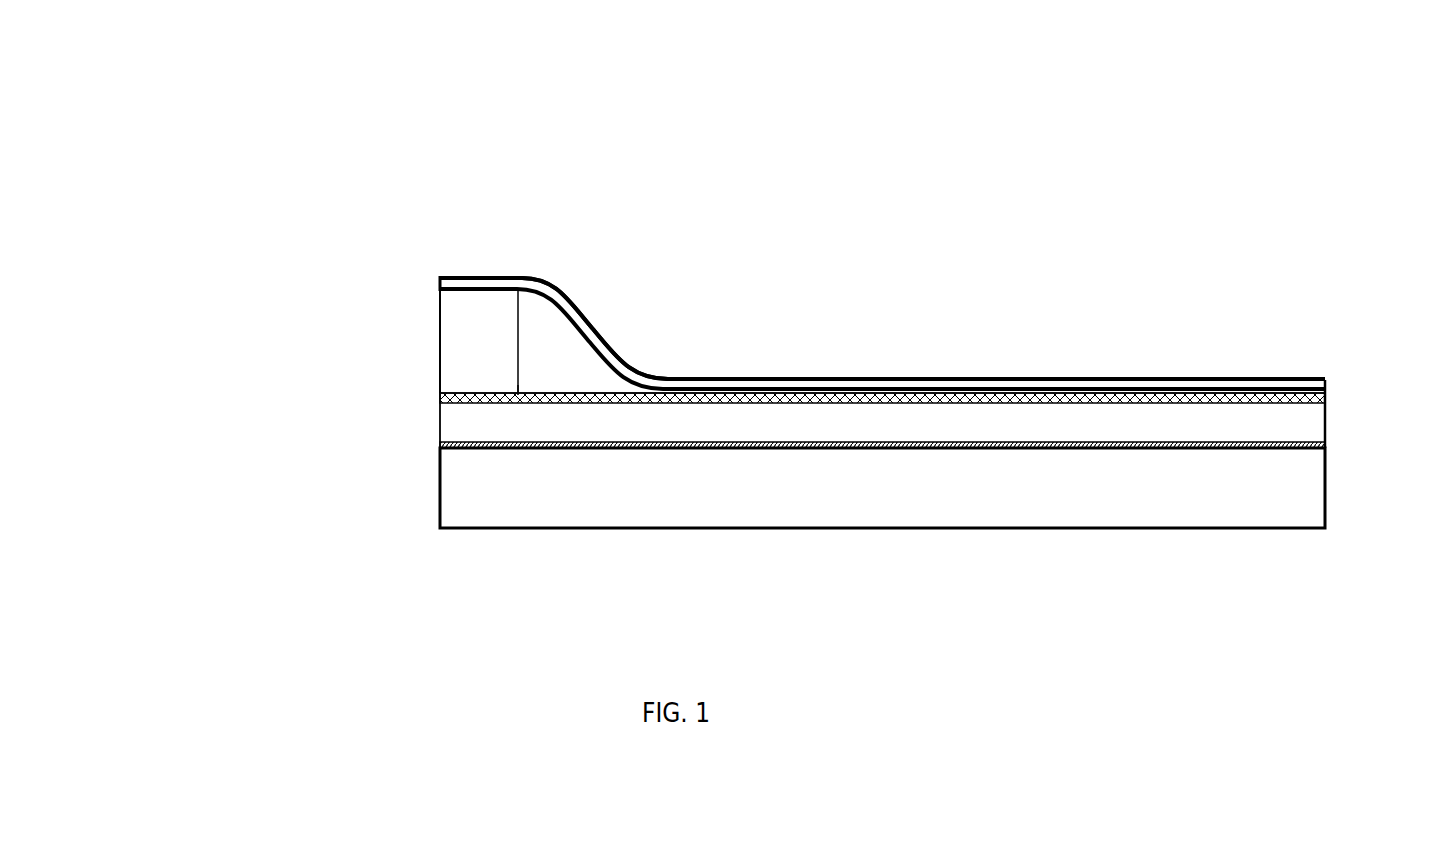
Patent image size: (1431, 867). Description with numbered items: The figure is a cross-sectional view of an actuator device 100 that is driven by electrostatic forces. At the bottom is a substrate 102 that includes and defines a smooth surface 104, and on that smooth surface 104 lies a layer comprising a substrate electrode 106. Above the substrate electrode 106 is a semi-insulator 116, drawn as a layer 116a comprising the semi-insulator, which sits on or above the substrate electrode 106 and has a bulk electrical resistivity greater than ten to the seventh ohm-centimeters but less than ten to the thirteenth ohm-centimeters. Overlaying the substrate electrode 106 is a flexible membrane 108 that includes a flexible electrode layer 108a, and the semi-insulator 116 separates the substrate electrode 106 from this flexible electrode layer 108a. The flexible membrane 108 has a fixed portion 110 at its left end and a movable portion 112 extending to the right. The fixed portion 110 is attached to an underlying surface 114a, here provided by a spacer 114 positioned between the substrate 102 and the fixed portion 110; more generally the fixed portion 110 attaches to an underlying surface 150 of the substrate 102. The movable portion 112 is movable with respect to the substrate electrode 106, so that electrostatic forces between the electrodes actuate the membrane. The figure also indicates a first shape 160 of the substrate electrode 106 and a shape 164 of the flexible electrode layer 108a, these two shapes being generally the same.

The actuator device 100 is at (1198, 160).
The substrate 102 is at (1120, 543).
The smooth surface 104 is at (673, 458).
The substrate electrode 106 is at (910, 425).
The flexible membrane 108 is at (590, 320).
The flexible electrode layer 108a is at (1260, 377).
The fixed portion 110 is at (508, 250).
The movable portion 112 is at (587, 290).
The spacer 114 is at (488, 348).
The underlying surface 114a is at (518, 395).
The semi-insulator 116 is at (440, 397).
The layer comprising a semi-insulator 116a is at (720, 397).
The underlying surface of the substrate 150 is at (478, 298).
The first shape of the substrate electrode 160 is at (1323, 423).
The shape of the flexible electrode layer 164 is at (1255, 325).